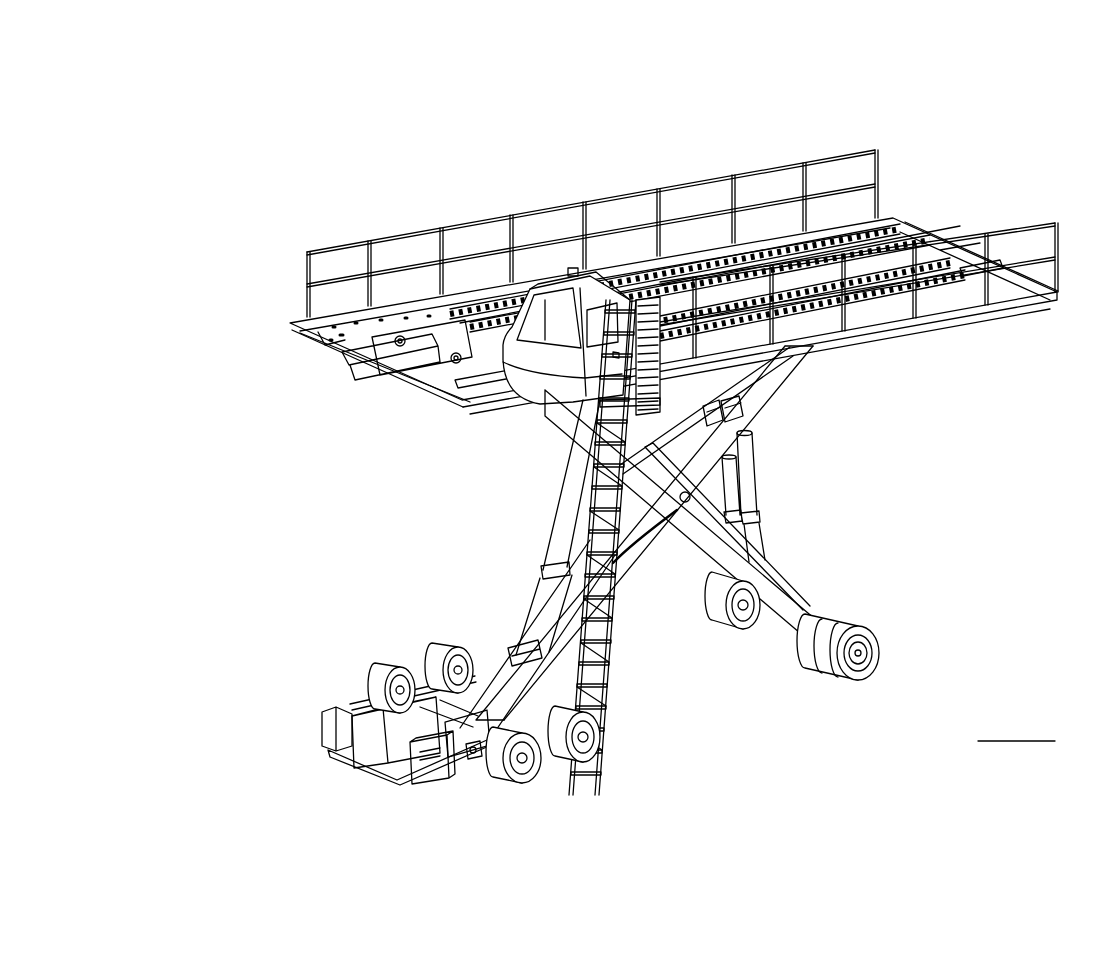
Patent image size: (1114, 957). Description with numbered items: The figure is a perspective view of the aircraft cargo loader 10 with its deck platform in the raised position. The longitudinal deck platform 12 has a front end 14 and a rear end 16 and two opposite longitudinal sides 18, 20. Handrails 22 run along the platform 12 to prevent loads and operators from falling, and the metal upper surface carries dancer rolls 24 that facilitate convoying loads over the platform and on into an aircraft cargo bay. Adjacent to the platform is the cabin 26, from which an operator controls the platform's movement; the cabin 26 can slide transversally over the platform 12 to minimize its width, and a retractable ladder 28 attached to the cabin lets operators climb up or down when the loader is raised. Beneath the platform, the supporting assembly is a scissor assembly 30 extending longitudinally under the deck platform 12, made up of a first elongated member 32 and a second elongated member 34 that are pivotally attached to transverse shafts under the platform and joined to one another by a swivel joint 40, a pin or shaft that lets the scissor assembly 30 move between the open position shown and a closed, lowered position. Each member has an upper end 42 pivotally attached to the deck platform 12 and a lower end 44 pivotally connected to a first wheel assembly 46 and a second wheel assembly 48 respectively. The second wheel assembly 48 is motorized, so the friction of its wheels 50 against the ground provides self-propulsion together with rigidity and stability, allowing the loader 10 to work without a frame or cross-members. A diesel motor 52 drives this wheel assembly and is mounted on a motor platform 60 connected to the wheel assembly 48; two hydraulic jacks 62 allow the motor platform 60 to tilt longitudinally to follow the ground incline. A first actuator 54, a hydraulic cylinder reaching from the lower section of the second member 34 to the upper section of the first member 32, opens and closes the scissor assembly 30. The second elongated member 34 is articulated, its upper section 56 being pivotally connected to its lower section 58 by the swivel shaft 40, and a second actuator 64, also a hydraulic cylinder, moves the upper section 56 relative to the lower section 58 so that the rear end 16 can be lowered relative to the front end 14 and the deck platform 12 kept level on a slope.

The aircraft cargo loader 10 is at (841, 78).
The deck platform 12 is at (483, 191).
The front end 14 is at (337, 338).
The rear end 16 is at (913, 233).
The longitudinal side 18 is at (628, 265).
The longitudinal side 20 is at (953, 315).
The handrails 22 is at (773, 168).
The dancer rolls 24 is at (717, 303).
The cabin 26 is at (527, 393).
The retractable ladder 28 is at (614, 771).
The scissor assembly 30 is at (968, 470).
The first elongated member 32 is at (665, 660).
The second elongated member 34 is at (869, 392).
The swivel joint 40 is at (782, 447).
The upper end 42 is at (842, 337).
The lower end 44 is at (500, 637).
The first wheel assembly 46 is at (832, 602).
The second wheel assembly 48 is at (431, 800).
The wheels 50 is at (520, 782).
The diesel motor 52 is at (362, 745).
The first actuator 54 is at (546, 533).
The upper section 56 is at (787, 400).
The lower section 58 is at (656, 562).
The motor platform 60 is at (325, 748).
The hydraulic jacks 62 is at (473, 758).
The second actuator 64 is at (763, 492).